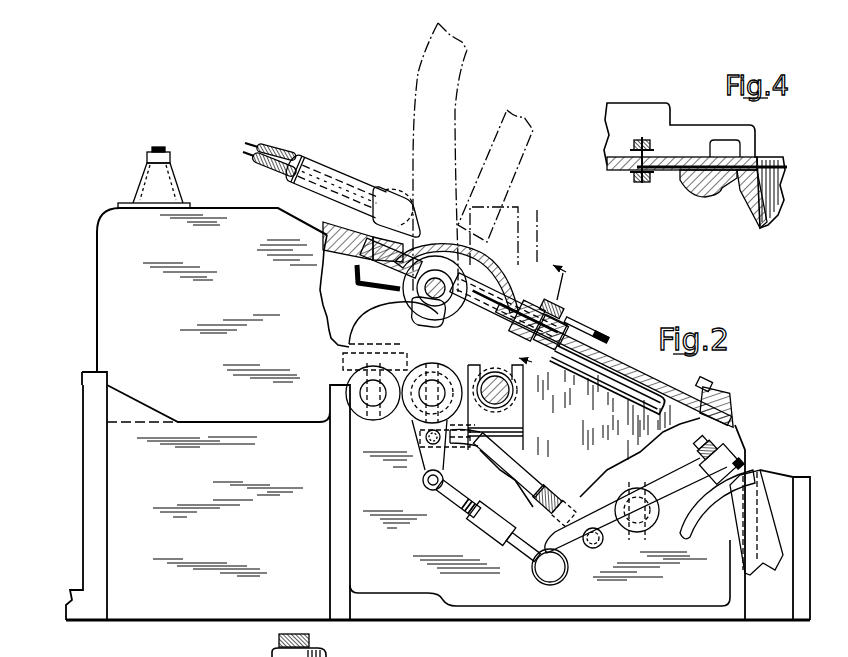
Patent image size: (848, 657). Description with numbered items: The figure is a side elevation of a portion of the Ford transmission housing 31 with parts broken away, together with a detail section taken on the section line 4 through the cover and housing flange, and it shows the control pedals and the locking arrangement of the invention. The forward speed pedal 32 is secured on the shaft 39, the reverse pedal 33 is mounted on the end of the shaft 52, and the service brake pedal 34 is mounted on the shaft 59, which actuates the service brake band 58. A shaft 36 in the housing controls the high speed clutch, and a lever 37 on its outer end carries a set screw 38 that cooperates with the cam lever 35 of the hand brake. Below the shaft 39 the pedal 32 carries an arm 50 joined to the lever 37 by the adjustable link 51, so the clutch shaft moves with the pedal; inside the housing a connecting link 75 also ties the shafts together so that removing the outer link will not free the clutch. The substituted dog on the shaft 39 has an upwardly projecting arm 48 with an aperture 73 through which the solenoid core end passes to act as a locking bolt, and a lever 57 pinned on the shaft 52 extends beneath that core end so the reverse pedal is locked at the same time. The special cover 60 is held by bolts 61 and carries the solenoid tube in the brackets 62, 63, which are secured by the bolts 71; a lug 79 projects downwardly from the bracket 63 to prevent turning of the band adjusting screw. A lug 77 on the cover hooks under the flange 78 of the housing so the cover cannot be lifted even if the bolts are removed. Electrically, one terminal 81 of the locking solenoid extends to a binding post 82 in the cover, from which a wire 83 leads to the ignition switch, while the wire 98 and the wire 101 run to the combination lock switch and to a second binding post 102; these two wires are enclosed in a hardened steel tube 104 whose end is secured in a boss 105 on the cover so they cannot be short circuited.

In FIG. 2, the section line 4— 4 is at (549, 319).
In FIG. 2, the transmission housing 31 is at (438, 402).
In FIG. 4, the transmission housing 31 is at (772, 203).
In FIG. 2, the pedal 32 is at (425, 115).
In FIG. 2, the pedal 33 is at (508, 157).
In FIG. 2, the pedal 34 is at (507, 223).
In FIG. 2, the cam lever 35 is at (727, 537).
In FIG. 2, the shaft 36 is at (625, 490).
In FIG. 2, the lever 37 is at (566, 568).
In FIG. 2, the set screw 38 is at (690, 437).
In FIG. 2, the shaft 39 is at (420, 412).
In FIG. 2, the arm 48 is at (433, 255).
In FIG. 2, the arm 50 is at (445, 477).
In FIG. 2, the adjustable link 51 is at (458, 498).
In FIG. 2, the shaft 52 is at (350, 386).
In FIG. 2, the lever 57 is at (366, 328).
In FIG. 2, the service brake band 58 is at (522, 452).
In FIG. 2, the shaft 59 is at (507, 395).
In FIG. 2, the cover 60 is at (673, 390).
In FIG. 4, the cover 60 is at (607, 165).
In FIG. 2, the bolts 61 is at (732, 393).
In FIG. 4, the bolts 61 is at (710, 150).
In FIG. 2, the bracket 62 is at (362, 254).
In FIG. 2, the bracket 63 is at (429, 312).
In FIG. 2, the bolts 71 is at (395, 280).
In FIG. 2, the aperture 73 is at (456, 275).
In FIG. 2, the connecting link 75 is at (548, 496).
In FIG. 2, the lug 77 is at (550, 362).
In FIG. 4, the lug 77 is at (692, 195).
In FIG. 4, the flange 78 is at (742, 192).
In FIG. 2, the lug 79 is at (522, 358).
In FIG. 2, the terminal 81 is at (505, 322).
In FIG. 2, the binding post 82 is at (564, 303).
In FIG. 2, the wire 83 is at (597, 328).
In FIG. 2, the wire 98 is at (283, 150).
In FIG. 2, the wire 101 is at (280, 176).
In FIG. 4, the binding post 102 is at (642, 186).
In FIG. 2, the hardened steel tube 104 is at (343, 170).
In FIG. 2, the boss 105 is at (394, 188).